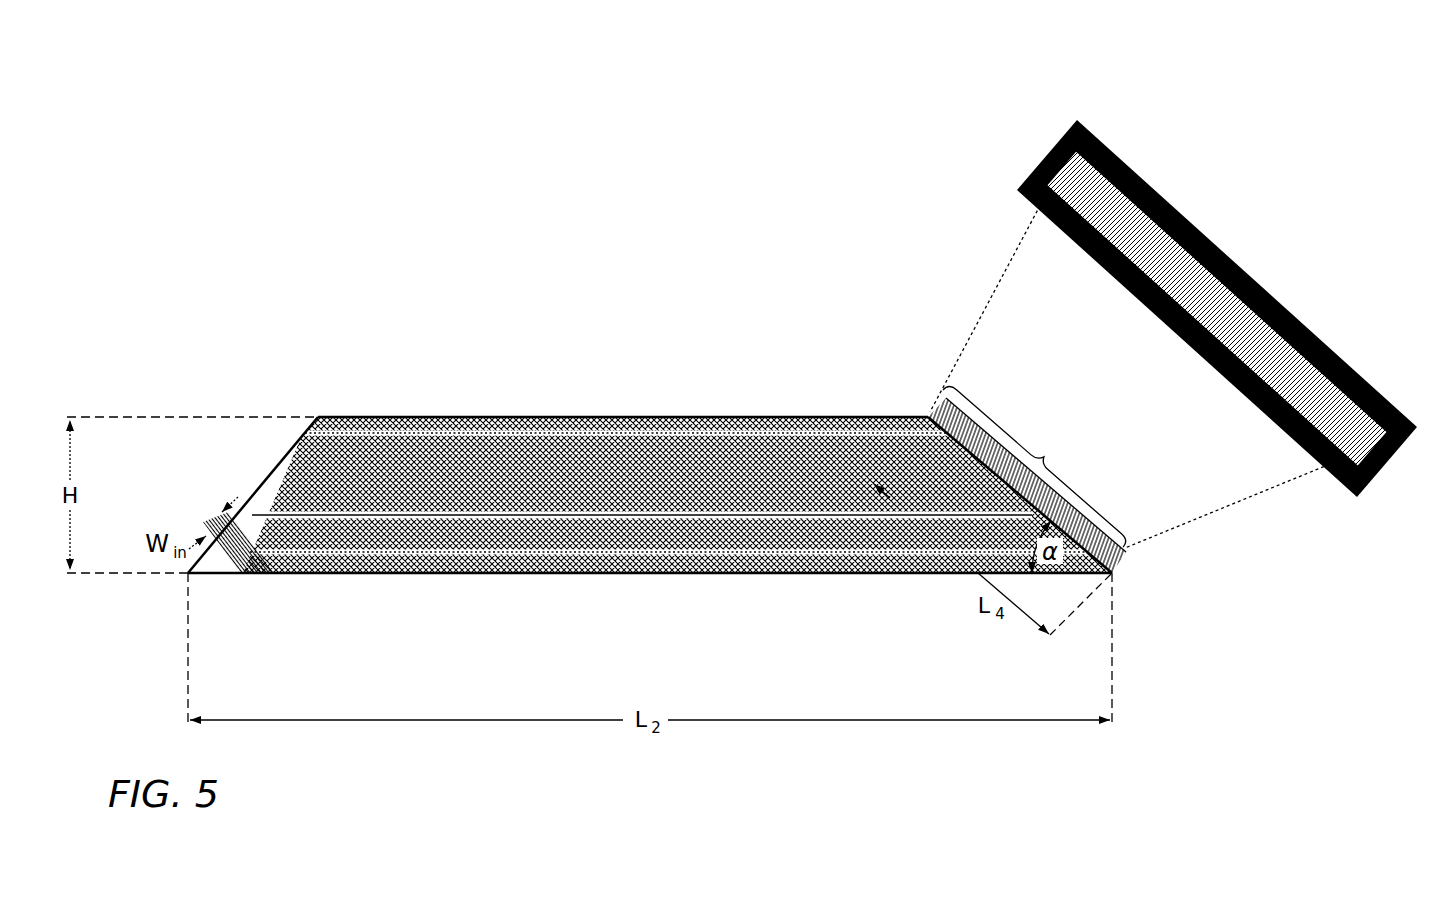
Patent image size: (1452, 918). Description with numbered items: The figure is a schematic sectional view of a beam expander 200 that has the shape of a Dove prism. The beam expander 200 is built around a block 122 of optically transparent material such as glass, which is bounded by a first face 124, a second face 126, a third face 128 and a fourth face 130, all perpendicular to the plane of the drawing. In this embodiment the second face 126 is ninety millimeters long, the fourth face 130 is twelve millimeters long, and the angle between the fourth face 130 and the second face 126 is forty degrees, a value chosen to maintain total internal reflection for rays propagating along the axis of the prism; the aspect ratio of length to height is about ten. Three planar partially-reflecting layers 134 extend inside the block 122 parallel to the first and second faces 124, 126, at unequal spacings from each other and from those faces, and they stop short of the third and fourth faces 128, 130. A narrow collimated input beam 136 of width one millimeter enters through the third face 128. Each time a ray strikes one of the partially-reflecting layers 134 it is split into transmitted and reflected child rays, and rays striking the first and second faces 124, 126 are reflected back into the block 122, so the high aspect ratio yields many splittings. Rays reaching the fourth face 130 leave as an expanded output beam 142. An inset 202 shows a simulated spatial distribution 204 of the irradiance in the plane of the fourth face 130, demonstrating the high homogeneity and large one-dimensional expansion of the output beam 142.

The beam expander 200 is at (636, 218).
The block 122 is at (458, 455).
The first face 124 is at (648, 417).
The second face 126 is at (425, 575).
The third face 128 is at (262, 482).
The fourth face 130 is at (1074, 540).
The partially-reflecting layers 134 is at (600, 520).
The input beam 136 is at (207, 516).
The output beam 142 is at (1031, 475).
The inset 202 is at (1180, 308).
The spatial distribution 204 is at (1157, 247).